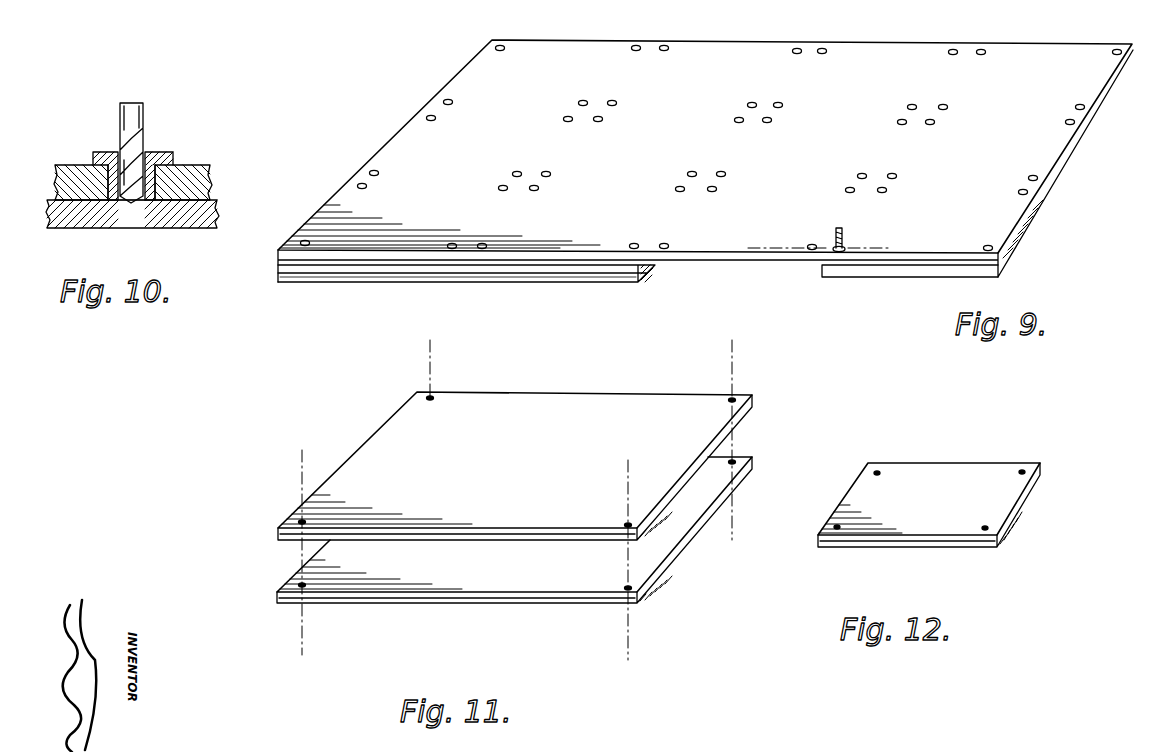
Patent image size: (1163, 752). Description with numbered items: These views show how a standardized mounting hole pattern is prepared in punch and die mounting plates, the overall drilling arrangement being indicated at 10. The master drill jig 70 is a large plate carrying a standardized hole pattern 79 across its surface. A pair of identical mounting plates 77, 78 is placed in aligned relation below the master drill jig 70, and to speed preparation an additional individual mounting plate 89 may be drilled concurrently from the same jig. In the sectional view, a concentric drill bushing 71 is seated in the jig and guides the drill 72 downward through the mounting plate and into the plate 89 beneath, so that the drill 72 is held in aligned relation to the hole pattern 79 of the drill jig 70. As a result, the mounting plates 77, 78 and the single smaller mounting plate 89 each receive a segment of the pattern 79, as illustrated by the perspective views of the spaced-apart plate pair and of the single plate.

In FIG. 9, the drilling fixture assembly 10 is at (705, 175).
In FIG. 9, the master drill jig 70 is at (1068, 146).
In FIG. 10, the master drill jig 70 is at (212, 172).
In FIG. 9, the concentric drill bushing 71 is at (845, 249).
In FIG. 10, the concentric drill bushing 71 is at (172, 150).
In FIG. 9, the drill 72 is at (842, 230).
In FIG. 10, the drill 72 is at (148, 125).
In FIG. 9, the mounting plate 77 is at (542, 272).
In FIG. 11, the mounting plate 77 is at (527, 398).
In FIG. 9, the mounting plate 78 is at (578, 275).
In FIG. 11, the mounting plate 78 is at (746, 475).
In FIG. 9, the standardized hole pattern 79 is at (546, 170).
In FIG. 10, the standardized hole pattern 79 is at (82, 230).
In FIG. 11, the standardized hole pattern 79 is at (431, 400).
In FIG. 12, the standardized hole pattern 79 is at (838, 526).
In FIG. 9, the individual mounting plate 89 is at (1040, 205).
In FIG. 10, the individual mounting plate 89 is at (217, 208).
In FIG. 12, the individual mounting plate 89 is at (955, 450).